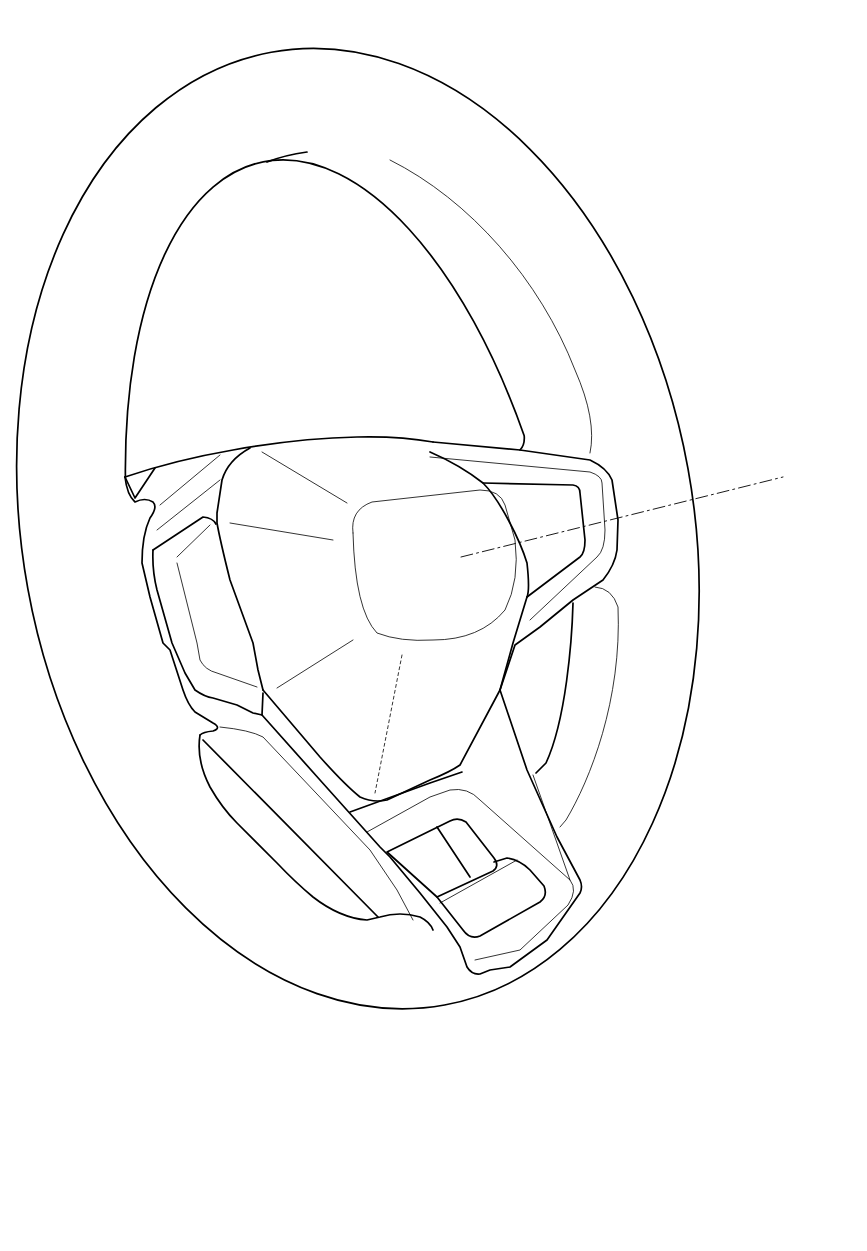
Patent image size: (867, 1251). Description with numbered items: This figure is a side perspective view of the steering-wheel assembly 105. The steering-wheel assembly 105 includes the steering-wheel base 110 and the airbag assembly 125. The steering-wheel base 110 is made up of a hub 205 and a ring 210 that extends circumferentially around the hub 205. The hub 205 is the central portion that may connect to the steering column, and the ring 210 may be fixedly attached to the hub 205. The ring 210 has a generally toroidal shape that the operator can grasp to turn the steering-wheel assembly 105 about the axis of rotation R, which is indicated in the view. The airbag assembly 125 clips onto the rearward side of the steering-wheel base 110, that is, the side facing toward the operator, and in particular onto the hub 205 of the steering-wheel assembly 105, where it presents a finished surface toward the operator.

The steering-wheel assembly 105 is at (640, 91).
The steering-wheel base 110 is at (172, 457).
The airbag assembly 125 is at (357, 462).
The hub 205 is at (197, 458).
The ring 210 is at (363, 93).